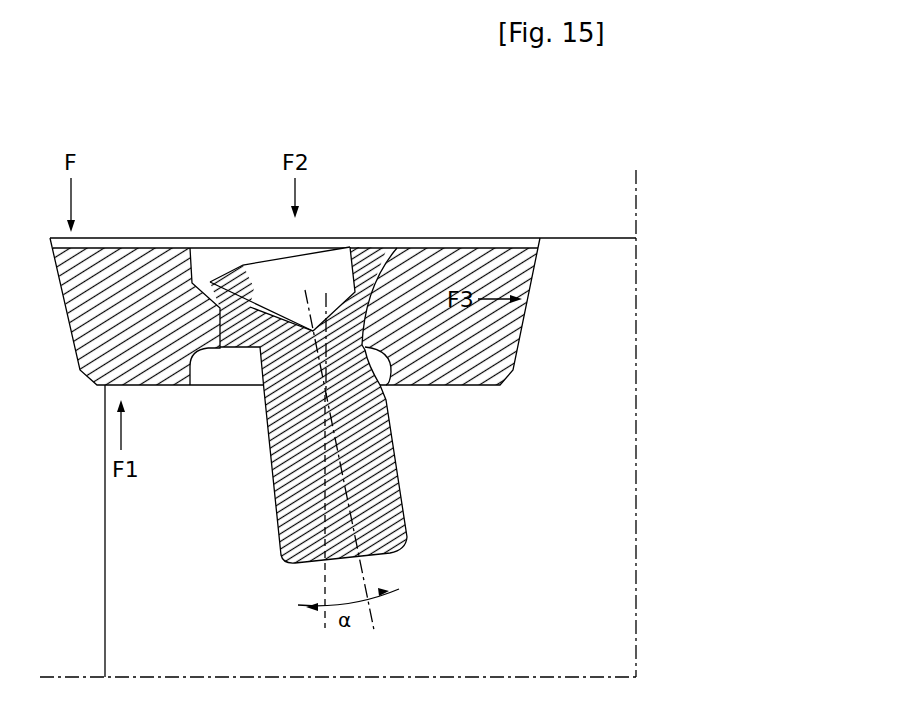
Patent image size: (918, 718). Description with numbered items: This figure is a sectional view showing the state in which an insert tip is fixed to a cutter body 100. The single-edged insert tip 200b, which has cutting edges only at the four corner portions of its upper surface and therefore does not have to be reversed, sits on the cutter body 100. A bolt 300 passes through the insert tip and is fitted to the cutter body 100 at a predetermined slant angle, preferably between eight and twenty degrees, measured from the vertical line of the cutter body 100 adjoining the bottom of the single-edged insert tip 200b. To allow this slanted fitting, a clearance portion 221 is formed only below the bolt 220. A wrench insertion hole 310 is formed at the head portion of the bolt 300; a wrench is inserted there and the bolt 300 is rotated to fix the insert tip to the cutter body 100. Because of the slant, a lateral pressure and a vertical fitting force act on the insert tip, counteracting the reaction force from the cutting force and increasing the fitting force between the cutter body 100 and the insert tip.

The cutter body 100 is at (617, 576).
The single-edged insert tip 200b is at (464, 263).
The bolt 220 is at (213, 257).
The clearance portion 221 is at (194, 386).
The bolt 300 is at (371, 262).
The wrench insertion hole 310 is at (250, 307).